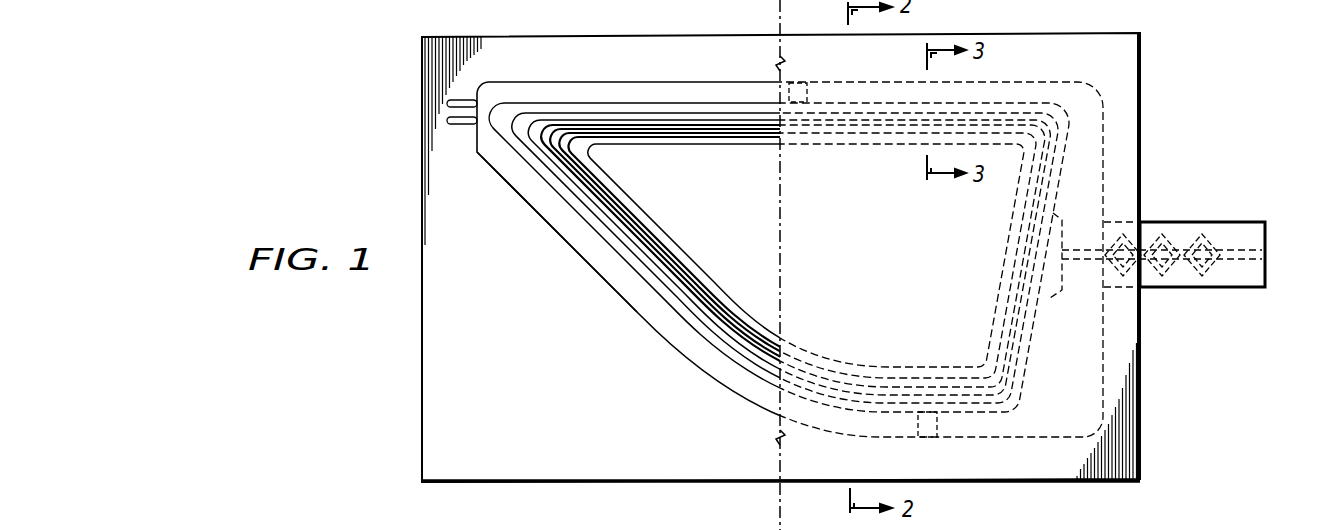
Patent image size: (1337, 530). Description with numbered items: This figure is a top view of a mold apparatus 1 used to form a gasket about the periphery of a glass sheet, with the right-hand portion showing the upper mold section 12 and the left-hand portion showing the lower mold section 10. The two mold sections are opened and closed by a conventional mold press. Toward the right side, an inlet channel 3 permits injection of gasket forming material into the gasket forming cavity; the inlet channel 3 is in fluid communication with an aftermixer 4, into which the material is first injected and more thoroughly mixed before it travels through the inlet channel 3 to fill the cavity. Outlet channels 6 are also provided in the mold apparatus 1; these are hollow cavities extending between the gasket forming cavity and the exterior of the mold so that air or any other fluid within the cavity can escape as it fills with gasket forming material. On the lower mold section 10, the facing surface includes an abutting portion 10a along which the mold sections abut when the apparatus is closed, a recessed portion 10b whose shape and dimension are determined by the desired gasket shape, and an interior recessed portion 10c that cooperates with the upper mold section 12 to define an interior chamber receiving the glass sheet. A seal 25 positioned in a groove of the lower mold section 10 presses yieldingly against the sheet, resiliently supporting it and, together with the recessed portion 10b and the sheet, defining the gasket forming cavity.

The mold apparatus 1 is at (1185, 35).
The inlet channel 3 is at (1083, 262).
The aftermixer 4 is at (1218, 288).
The outlet channels 6 is at (797, 96).
The lower mold section 10 is at (508, 444).
The abutting portion 10a is at (578, 237).
The recessed portion 10b is at (552, 110).
The interior recessed portion 10c is at (688, 262).
The upper mold section 12 is at (1141, 115).
The seal 25 is at (687, 130).